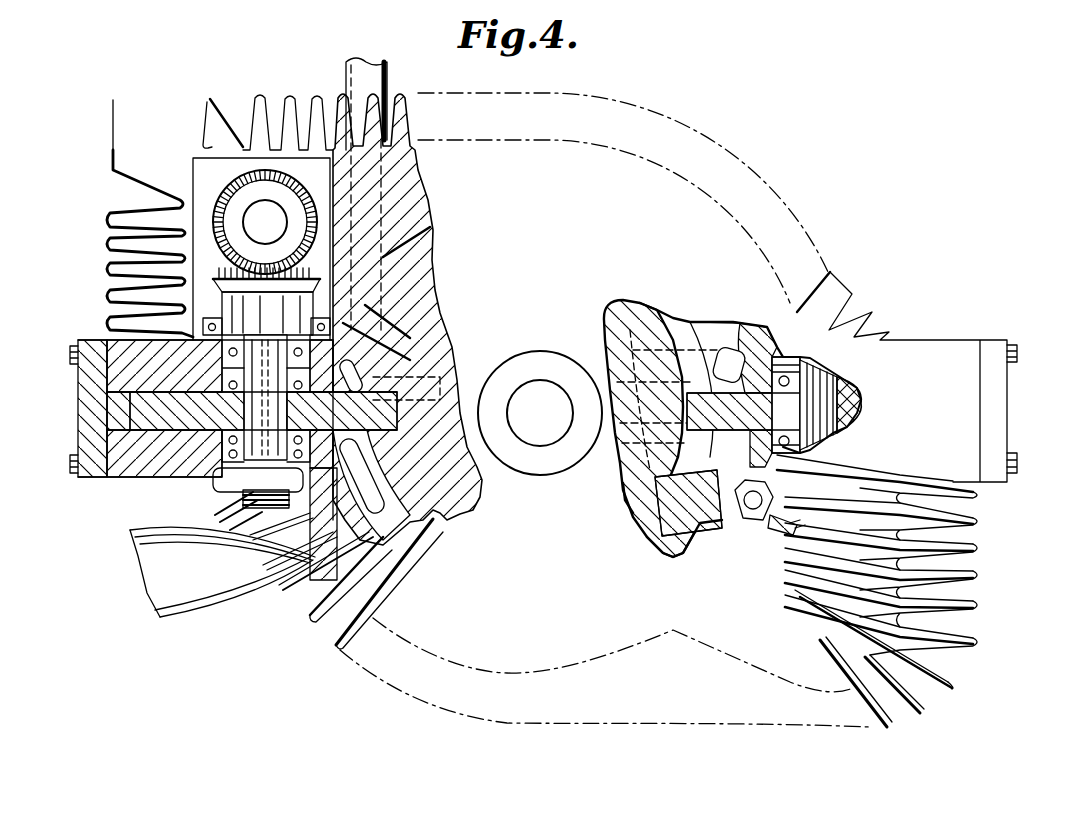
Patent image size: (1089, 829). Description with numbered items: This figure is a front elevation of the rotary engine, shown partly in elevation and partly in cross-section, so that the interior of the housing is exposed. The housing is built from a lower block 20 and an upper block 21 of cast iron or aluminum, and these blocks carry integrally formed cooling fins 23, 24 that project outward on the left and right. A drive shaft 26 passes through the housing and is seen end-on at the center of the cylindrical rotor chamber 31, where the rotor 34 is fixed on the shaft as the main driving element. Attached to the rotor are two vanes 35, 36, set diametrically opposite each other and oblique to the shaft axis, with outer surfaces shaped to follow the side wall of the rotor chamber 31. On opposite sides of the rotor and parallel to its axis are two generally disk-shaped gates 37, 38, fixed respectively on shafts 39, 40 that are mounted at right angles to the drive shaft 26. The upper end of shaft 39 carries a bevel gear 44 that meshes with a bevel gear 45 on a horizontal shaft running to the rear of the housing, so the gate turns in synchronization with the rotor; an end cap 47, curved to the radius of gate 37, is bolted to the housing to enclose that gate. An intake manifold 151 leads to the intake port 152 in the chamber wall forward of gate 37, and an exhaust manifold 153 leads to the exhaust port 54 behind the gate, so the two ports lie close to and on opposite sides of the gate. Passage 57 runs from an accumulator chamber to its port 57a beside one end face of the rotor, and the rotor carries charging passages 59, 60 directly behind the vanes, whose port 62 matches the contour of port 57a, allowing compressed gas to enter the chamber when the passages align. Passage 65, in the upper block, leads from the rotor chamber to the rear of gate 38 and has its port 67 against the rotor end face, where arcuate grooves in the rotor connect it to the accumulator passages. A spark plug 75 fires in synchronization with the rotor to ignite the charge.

The lower block 20 is at (330, 620).
The upper block 21 is at (258, 166).
The cooling fins 23 is at (953, 673).
The cooling fins 24 is at (203, 146).
The drive shaft 26 is at (544, 397).
The rotor chamber 31 is at (416, 250).
The rotor 34 is at (654, 328).
The vane 35 is at (441, 293).
The vane 36 is at (673, 560).
The gate 37 is at (160, 412).
The gate 38 is at (688, 402).
The shaft 39 is at (220, 408).
The shaft 40 is at (817, 390).
The bevel gear 44 is at (223, 273).
The bevel gear 45 is at (238, 198).
The end cap 47 is at (88, 404).
The exhaust port 54 is at (367, 480).
The passage 57 is at (613, 483).
The port 57a is at (660, 520).
The charging passage 59 is at (362, 393).
The charging passage 60 is at (630, 437).
The port 62 is at (600, 423).
The passage 65 is at (714, 312).
The port 67 is at (732, 358).
The spark plug 75 is at (760, 530).
The intake manifold 151 is at (370, 84).
The port 152 is at (398, 360).
The exhaust manifold 153 is at (223, 577).